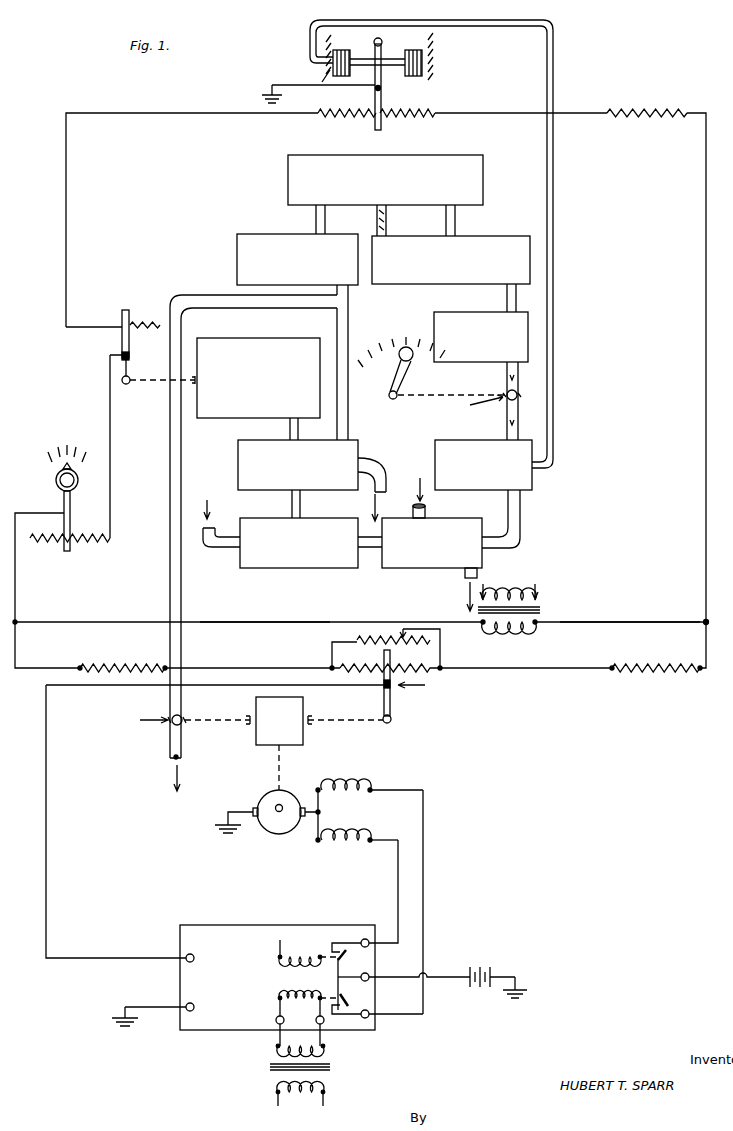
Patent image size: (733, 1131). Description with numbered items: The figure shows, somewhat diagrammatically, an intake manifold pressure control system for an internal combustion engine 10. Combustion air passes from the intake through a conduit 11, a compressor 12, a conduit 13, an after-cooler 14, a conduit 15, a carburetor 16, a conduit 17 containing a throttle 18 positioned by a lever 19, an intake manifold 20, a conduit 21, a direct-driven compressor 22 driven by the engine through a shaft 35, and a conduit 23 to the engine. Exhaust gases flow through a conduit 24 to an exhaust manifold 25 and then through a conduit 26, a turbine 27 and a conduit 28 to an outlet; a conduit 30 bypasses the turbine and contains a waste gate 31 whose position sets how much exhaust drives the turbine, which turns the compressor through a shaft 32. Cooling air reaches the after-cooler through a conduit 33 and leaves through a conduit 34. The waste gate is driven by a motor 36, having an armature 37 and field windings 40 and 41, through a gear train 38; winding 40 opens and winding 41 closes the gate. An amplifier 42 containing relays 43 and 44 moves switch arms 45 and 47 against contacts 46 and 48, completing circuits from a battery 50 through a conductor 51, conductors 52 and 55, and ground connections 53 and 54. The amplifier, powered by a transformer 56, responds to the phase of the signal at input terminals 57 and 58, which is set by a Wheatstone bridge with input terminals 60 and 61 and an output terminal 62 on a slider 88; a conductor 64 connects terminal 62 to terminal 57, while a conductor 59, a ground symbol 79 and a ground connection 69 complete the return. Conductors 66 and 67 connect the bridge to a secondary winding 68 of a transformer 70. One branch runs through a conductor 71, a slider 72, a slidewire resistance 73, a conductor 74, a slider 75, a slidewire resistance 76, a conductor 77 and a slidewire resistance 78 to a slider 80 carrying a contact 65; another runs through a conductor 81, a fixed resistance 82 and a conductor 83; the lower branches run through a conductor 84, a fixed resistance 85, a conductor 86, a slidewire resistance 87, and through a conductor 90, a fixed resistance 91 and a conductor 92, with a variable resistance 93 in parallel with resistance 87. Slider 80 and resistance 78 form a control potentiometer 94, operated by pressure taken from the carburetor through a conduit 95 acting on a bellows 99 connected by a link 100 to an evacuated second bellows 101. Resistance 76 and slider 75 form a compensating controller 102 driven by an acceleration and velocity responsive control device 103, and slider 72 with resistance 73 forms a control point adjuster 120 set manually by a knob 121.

The internal combustion engine 10 is at (484, 170).
The conduit 11 is at (216, 548).
The compressor 12 is at (300, 569).
The conduit 13 is at (372, 550).
The after-cooler 14 is at (483, 556).
The conduit 15 is at (521, 525).
The carburetor 16 is at (533, 480).
The conduit 17 is at (506, 425).
The throttle 18 is at (500, 387).
The lever 19 is at (392, 382).
The intake manifold 20 is at (470, 313).
The conduit 21 is at (517, 300).
The direct-driven compressor 22 is at (512, 242).
The conduit 23 is at (456, 222).
The conduit 24 is at (315, 222).
The exhaust manifold 25 is at (237, 258).
The conduit 26 is at (349, 331).
The turbine 27 is at (352, 440).
The conduit 28 is at (387, 482).
The conduit 30 is at (182, 598).
The waste gate 31 is at (191, 729).
The shaft 32 is at (291, 507).
The conduit 33 is at (426, 512).
The conduit 34 is at (478, 576).
The shaft 35 is at (387, 222).
The motor 36 is at (257, 837).
The armature 37 is at (279, 835).
The gear train 38 is at (258, 748).
The field winding 40 is at (346, 796).
The field winding 41 is at (345, 838).
The amplifier 42 is at (236, 925).
The relay 43 is at (271, 958).
The relay 44 is at (271, 1002).
The switch arm 45 is at (350, 954).
The stationary contact 46 is at (344, 940).
The switch arm 47 is at (352, 998).
The stationary contact 48 is at (340, 1010).
The battery 50 is at (470, 976).
The conductor 51 is at (437, 985).
The conductor 52 is at (397, 895).
The ground connection 53 is at (228, 820).
The ground connection 54 is at (518, 990).
The conductor 55 is at (424, 910).
The transformer 56 is at (259, 1063).
The signal input terminal 57 is at (193, 955).
The signal input terminal 58 is at (195, 1008).
The conductor 59 is at (290, 85).
The input terminal 60 is at (21, 615).
The input terminal 61 is at (703, 614).
The output terminal 62 is at (392, 690).
The conductor 64 is at (47, 840).
The contact 65 is at (382, 88).
The conductor 66 is at (266, 621).
The conductor 67 is at (620, 621).
The secondary winding 68 is at (506, 630).
The ground connection 69 is at (124, 1012).
The transformer 70 is at (543, 605).
The conductor 71 is at (16, 580).
The slider 72 is at (72, 526).
The slidewire resistance 73 is at (94, 541).
The conductor 74 is at (111, 440).
The slider 75 is at (121, 340).
The slidewire resistance 76 is at (146, 320).
The conductor 77 is at (67, 205).
The slidewire resistance 78 is at (352, 116).
The ground 79 is at (270, 90).
The slider 80 is at (374, 95).
The conductor 81 is at (705, 325).
The fixed resistance 82 is at (648, 115).
The conductor 83 is at (512, 113).
The conductor 84 is at (16, 646).
The fixed resistance 85 is at (124, 666).
The conductor 86 is at (250, 667).
The slidewire resistance 87 is at (364, 666).
The slider 88 is at (383, 700).
The conductor 90 is at (705, 640).
The fixed resistance 91 is at (652, 670).
The conductor 92 is at (548, 669).
The variable resistance 93 is at (355, 639).
The control potentiometer 94 is at (430, 107).
The conduit 95 is at (554, 355).
The solenoid 99 is at (345, 50).
The link 100 is at (390, 60).
The second bellows 101 is at (425, 70).
The compensating controller 102 is at (118, 360).
The acceleration and velocity responsive control device 103 is at (258, 338).
The control point adjuster 120 is at (44, 483).
The knob 121 is at (80, 480).